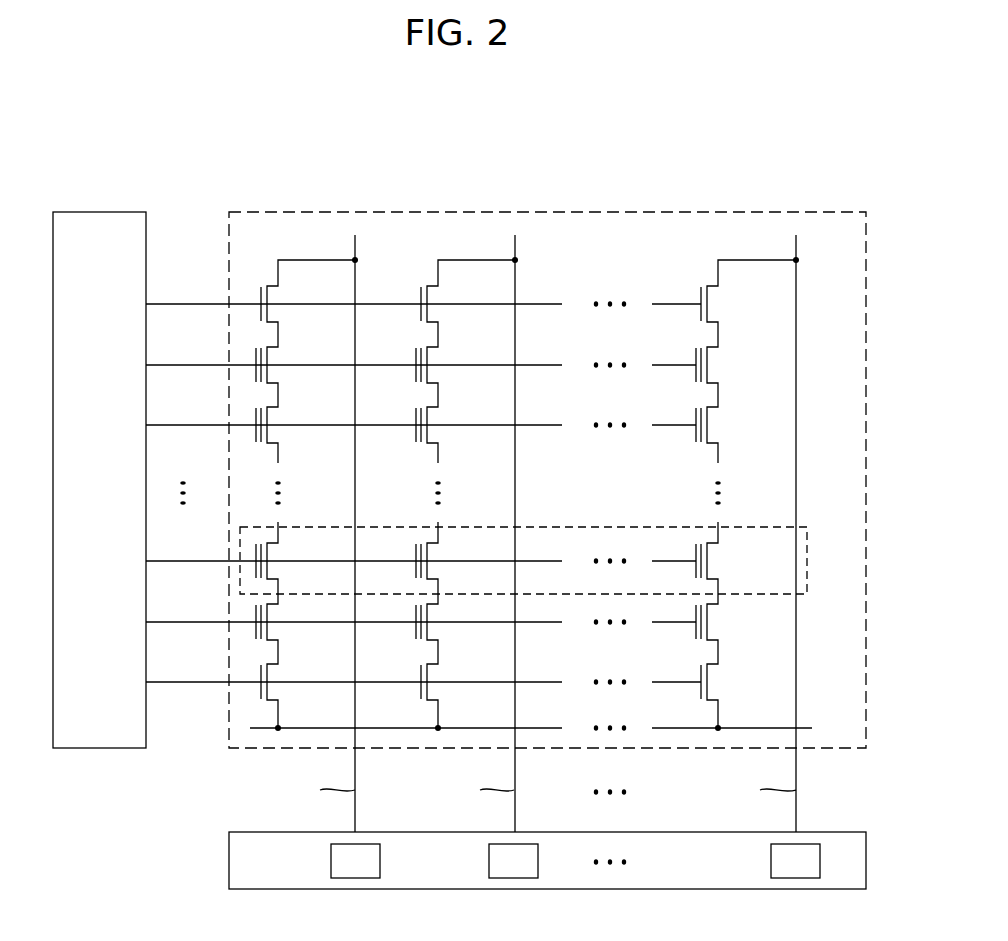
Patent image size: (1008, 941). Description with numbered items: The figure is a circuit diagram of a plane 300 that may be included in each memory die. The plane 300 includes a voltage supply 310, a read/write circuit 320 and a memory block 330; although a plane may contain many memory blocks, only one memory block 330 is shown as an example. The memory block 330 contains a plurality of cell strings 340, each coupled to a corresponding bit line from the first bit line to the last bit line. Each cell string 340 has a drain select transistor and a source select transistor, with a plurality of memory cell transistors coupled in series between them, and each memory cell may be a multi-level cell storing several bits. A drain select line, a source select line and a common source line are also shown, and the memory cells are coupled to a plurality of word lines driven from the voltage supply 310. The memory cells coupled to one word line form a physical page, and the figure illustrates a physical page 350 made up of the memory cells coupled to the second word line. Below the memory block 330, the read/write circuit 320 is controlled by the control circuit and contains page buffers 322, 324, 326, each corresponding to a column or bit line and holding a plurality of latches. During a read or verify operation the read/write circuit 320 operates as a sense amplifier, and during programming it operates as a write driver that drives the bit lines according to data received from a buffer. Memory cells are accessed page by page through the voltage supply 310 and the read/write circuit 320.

The plane 300 is at (810, 119).
The voltage supply 310 is at (97, 212).
The read/write circuit 320 is at (229, 861).
The page buffer 322 is at (331, 861).
The page buffer 324 is at (489, 861).
The page buffer 326 is at (771, 861).
The memory block 330 is at (760, 212).
The cell string 340 is at (266, 258).
The physical page 350 is at (808, 571).